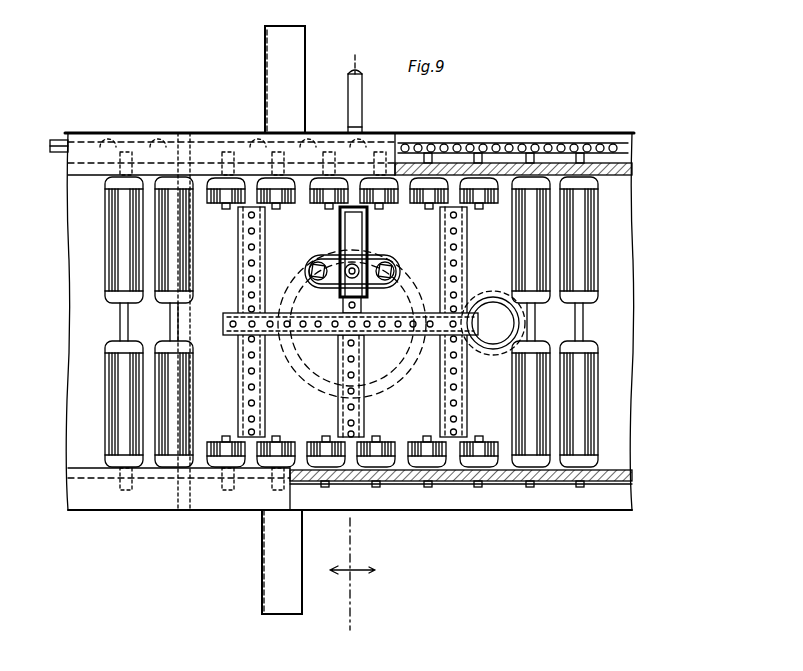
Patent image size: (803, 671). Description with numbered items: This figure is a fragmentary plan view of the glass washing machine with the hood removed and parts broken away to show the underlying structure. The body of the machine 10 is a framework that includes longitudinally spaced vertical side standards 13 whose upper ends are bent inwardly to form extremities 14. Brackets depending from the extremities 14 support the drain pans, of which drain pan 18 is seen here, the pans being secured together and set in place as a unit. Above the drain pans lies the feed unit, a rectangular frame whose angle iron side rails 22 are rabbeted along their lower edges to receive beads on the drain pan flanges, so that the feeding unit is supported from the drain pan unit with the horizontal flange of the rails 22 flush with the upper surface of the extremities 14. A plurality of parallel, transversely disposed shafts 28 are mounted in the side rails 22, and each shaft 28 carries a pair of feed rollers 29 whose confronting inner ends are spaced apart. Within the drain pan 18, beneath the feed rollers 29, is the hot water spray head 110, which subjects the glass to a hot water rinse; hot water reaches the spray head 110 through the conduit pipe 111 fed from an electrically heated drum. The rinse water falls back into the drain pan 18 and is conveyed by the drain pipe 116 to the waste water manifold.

The body of the machine 10 is at (352, 347).
The vertical side standards 13 is at (270, 43).
The inwardly bent extremities 14 is at (280, 100).
The drain pan 18 is at (506, 460).
The side rails 22 is at (462, 486).
The shafts 28 is at (583, 330).
The feed rollers 29 is at (588, 248).
The hot water spray head 110 is at (392, 318).
The conduit pipe 111 is at (364, 108).
The drain pipe 116 is at (493, 342).